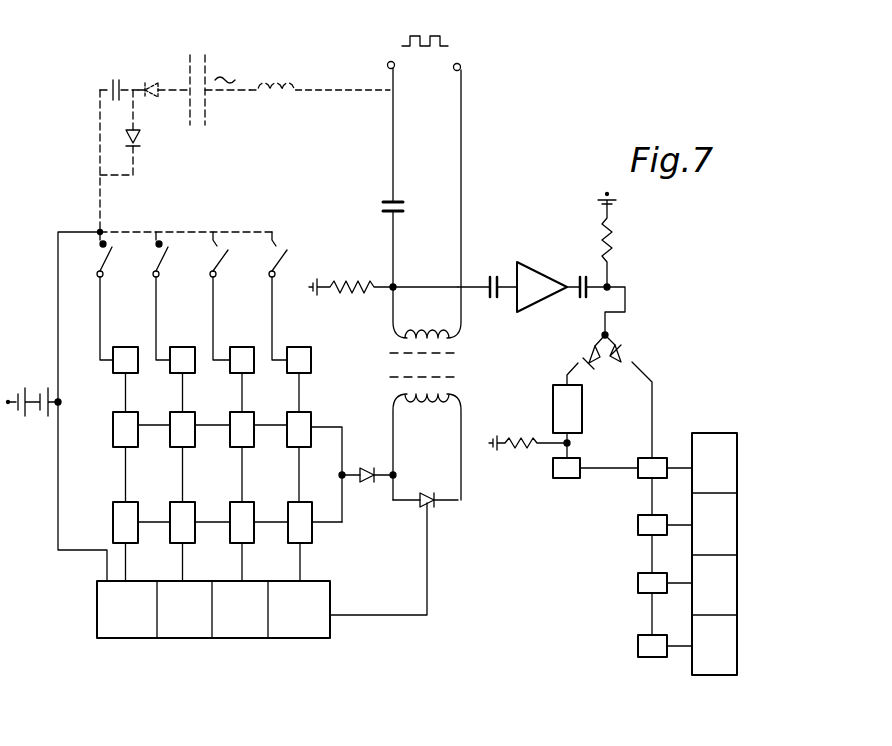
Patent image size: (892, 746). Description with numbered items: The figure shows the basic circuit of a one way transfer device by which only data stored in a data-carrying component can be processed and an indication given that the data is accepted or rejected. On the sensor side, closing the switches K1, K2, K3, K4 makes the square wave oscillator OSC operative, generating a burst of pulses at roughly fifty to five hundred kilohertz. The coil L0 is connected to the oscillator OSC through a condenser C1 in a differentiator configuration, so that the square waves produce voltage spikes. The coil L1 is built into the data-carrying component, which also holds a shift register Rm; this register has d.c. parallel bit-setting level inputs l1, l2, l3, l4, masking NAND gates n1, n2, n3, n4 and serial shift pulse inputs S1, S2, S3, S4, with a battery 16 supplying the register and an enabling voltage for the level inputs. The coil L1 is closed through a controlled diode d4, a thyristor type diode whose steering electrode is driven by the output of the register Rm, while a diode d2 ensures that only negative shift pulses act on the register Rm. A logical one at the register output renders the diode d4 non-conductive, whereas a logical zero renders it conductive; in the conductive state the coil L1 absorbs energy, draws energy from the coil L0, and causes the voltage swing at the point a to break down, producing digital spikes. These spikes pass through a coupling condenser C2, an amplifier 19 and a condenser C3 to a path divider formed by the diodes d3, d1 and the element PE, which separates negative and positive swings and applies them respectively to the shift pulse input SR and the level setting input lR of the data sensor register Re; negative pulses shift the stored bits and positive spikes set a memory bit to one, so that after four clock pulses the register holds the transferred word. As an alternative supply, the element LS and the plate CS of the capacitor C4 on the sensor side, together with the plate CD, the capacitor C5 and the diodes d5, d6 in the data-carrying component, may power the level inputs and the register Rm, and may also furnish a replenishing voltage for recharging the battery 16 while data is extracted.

The capacitor C5 is at (117, 147).
The diode d5 is at (162, 78).
The diode d6 is at (131, 132).
The plate of capacitor C4 CD is at (188, 56).
The plate of capacitor C4 CS is at (209, 70).
The capacitor C4 is at (225, 122).
The supply coil LS is at (320, 67).
The square wave oscillator OSC is at (424, 62).
The condenser C1 is at (373, 177).
The coil L0 is at (437, 223).
The coil L1 is at (439, 438).
The point a is at (383, 295).
The coupling condenser C2 is at (487, 274).
The amplifier 19 is at (530, 272).
The condenser C3 is at (593, 264).
The diode d3 is at (578, 354).
The diode d1 is at (632, 390).
The path divider element PE is at (567, 409).
The level setting input lR is at (563, 455).
The shift pulse input SR is at (665, 544).
The shift register Re is at (726, 432).
The battery 16 is at (44, 397).
The switch K1 is at (116, 296).
The switch K2 is at (172, 296).
The switch K3 is at (231, 296).
The switch K4 is at (289, 296).
The level input l1 is at (125, 368).
The level input l2 is at (182, 368).
The level input l3 is at (241, 368).
The level input l4 is at (298, 368).
The masking NAND gate n1 is at (141, 448).
The masking NAND gate n2 is at (200, 448).
The masking NAND gate n3 is at (258, 448).
The masking NAND gate n4 is at (314, 458).
The serial shift pulse input S1 is at (141, 531).
The serial shift pulse input S2 is at (200, 531).
The serial shift pulse input S3 is at (259, 531).
The serial shift pulse input S4 is at (315, 533).
The shift register Rm is at (332, 594).
The diode d2 is at (367, 462).
The controlled diode d4 is at (394, 538).